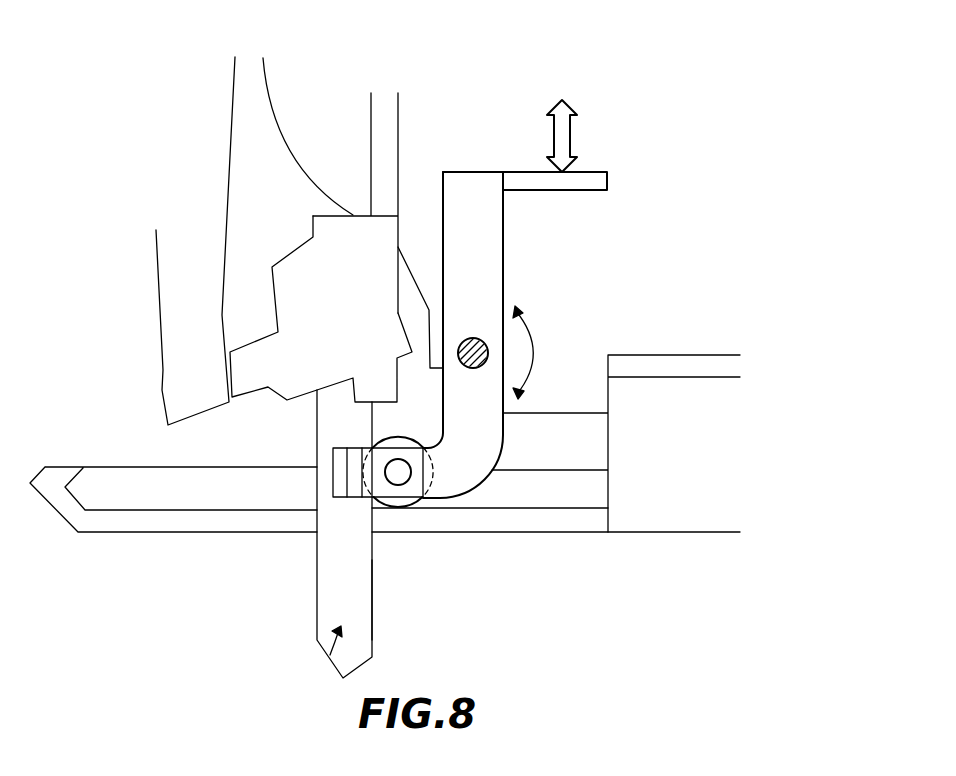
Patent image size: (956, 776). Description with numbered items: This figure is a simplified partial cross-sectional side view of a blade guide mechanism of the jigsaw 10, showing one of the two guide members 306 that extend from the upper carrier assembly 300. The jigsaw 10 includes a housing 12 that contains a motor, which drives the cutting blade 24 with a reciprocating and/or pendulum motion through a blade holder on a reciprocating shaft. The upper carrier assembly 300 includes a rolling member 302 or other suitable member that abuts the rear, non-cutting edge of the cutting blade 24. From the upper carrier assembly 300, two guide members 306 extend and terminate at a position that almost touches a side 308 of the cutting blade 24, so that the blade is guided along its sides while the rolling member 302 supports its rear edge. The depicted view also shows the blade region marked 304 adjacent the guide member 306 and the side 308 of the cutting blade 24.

The jigsaw 10 is at (672, 64).
The housing 12 is at (178, 203).
The cutting blade 24 is at (330, 590).
The upper carrier assembly 300 is at (492, 487).
The rolling member 302 is at (403, 500).
The bracket edge surface 304 is at (374, 597).
The guide member 306 is at (355, 498).
The side 308 is at (330, 655).